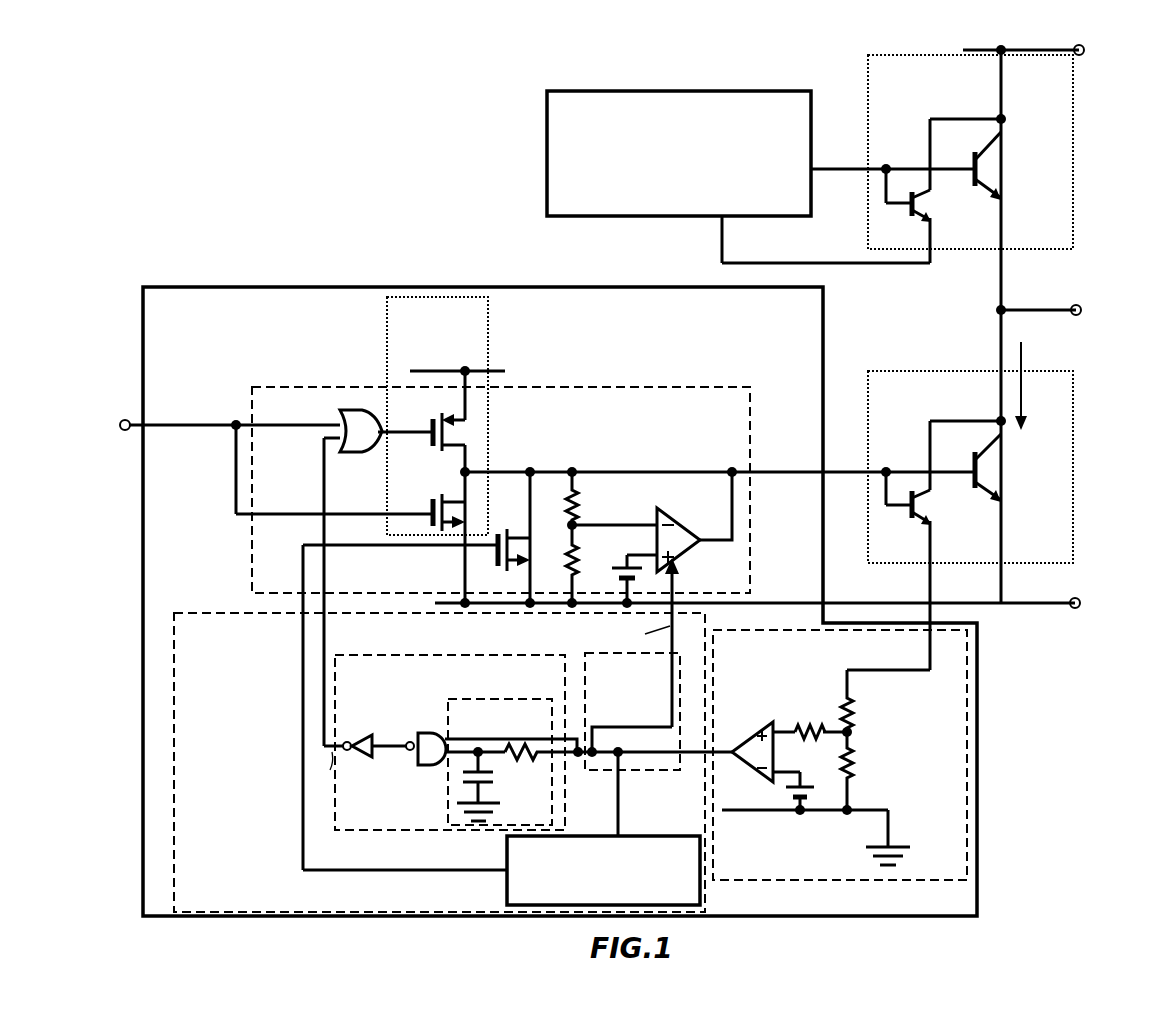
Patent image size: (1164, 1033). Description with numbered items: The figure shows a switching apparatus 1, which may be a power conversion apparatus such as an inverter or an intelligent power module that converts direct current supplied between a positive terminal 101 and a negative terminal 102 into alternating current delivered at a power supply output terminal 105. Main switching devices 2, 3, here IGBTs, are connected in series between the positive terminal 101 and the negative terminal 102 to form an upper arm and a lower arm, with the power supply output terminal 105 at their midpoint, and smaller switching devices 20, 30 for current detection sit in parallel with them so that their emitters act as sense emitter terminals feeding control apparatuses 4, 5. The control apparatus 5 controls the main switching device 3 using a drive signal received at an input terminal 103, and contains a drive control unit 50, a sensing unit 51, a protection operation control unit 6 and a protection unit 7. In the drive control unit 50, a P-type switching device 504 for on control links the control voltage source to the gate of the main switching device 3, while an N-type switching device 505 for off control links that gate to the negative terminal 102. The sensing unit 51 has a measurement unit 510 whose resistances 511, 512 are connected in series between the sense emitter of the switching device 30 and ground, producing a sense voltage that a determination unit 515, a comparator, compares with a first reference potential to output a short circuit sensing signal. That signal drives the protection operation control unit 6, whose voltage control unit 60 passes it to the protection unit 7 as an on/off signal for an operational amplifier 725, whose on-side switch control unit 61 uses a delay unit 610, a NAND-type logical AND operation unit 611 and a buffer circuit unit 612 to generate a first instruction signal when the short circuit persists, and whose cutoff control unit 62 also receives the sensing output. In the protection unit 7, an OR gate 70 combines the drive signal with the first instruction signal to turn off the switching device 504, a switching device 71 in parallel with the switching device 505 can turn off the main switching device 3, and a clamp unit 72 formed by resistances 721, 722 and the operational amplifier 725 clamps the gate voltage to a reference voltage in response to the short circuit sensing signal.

The switching apparatus 1 is at (263, 65).
The main switching device 2 is at (1006, 152).
The switching device for current detection 20 is at (923, 193).
The main switching device 3 is at (1006, 455).
The switching device for current detection 30 is at (923, 493).
The control apparatus 4 is at (572, 90).
The control apparatus 5 is at (197, 286).
The drive control unit 50 is at (387, 341).
The switching device for on control 504 is at (430, 426).
The switching device for off control 505 is at (430, 510).
The sensing unit 51 is at (970, 672).
The measurement unit 510 is at (897, 742).
The resistance 511 is at (852, 702).
The resistance 512 is at (852, 770).
The determination unit 515 is at (773, 704).
The protection operation control unit 6 is at (198, 622).
The voltage control unit 60 is at (668, 775).
The on-side switch control unit 61 is at (383, 662).
The delay unit 610 is at (552, 680).
The logical AND operation unit 611 is at (428, 766).
The buffer circuit unit 612 is at (362, 760).
The cutoff control unit 62 is at (600, 836).
The protection unit 7 is at (286, 390).
The OR gate 70 is at (370, 454).
The switching device 71 is at (500, 555).
The clamp unit 72 is at (553, 452).
The resistance 721 is at (578, 496).
The resistance 722 is at (602, 559).
The operational amplifier 725 is at (685, 558).
The positive terminal 101 is at (1084, 56).
The negative terminal 102 is at (1080, 609).
The input terminal 103 is at (112, 418).
The power supply output terminal 105 is at (1081, 316).